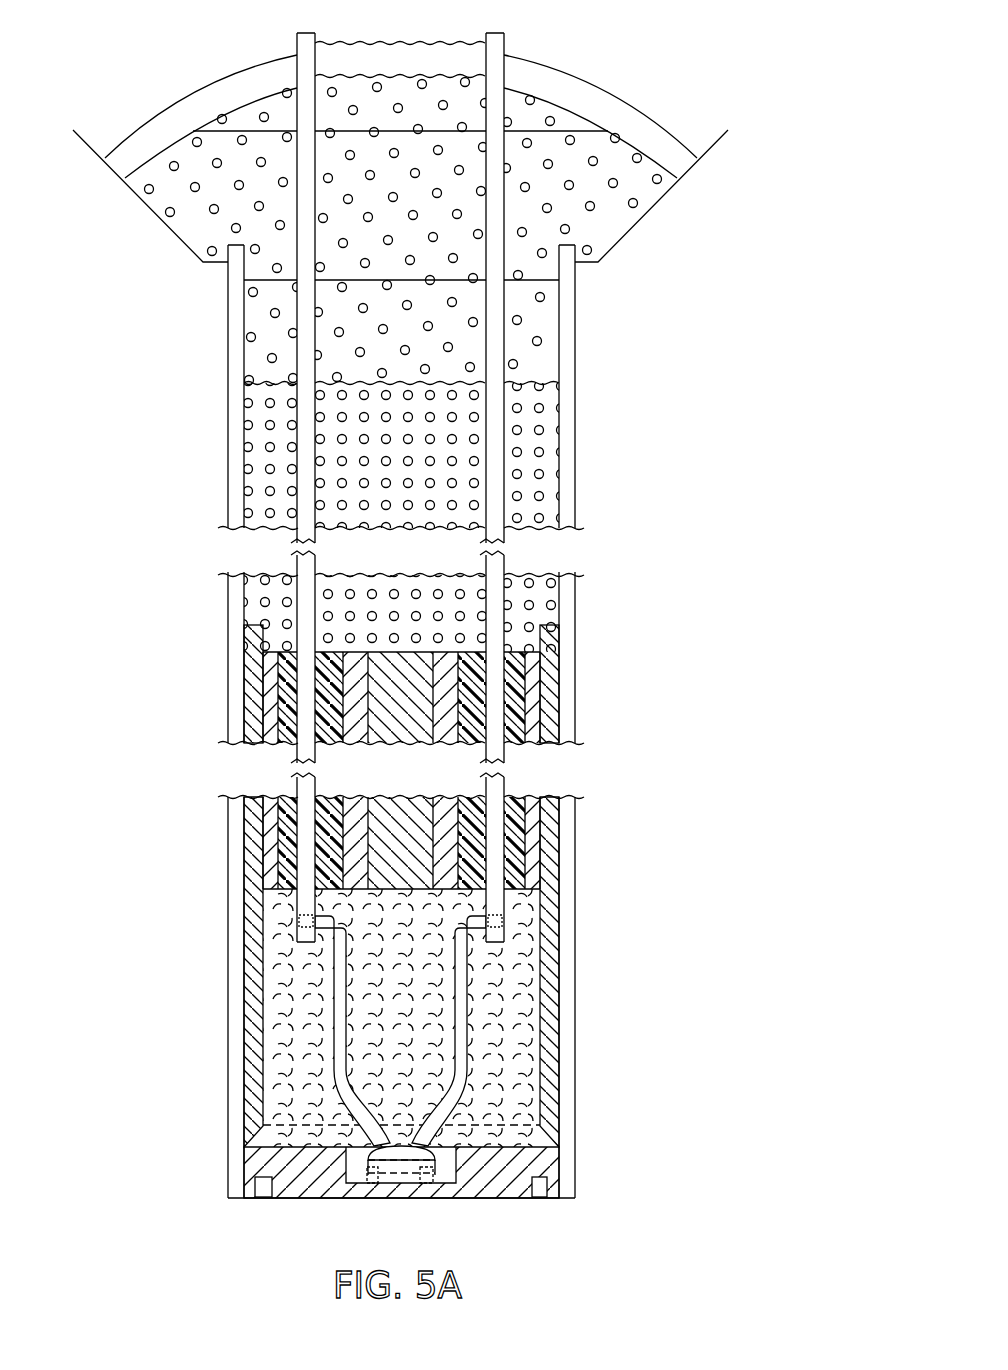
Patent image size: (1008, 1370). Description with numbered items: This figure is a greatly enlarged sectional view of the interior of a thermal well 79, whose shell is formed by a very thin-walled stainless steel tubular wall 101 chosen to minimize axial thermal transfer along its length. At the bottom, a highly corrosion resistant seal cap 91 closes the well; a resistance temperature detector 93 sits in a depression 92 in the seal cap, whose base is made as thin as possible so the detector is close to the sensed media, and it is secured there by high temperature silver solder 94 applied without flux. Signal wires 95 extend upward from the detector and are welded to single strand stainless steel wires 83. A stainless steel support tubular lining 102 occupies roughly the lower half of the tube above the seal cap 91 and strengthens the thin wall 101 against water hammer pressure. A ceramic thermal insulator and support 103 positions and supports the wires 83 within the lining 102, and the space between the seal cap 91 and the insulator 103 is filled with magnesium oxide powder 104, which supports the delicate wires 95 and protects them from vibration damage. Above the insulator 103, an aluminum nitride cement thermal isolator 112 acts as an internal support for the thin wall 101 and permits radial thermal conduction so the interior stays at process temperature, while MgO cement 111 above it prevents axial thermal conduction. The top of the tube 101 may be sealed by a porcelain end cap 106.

The thermal well 79 is at (610, 347).
The single strand stainless steel wires 83 is at (297, 43).
The seal cap 91 is at (262, 1167).
The depression 92 is at (456, 1165).
The resistance temperature detector (RTD) 93 is at (421, 1185).
The high temperature silver solder 94 is at (377, 1185).
The signal wires 95 is at (330, 986).
The tubular wall 101 is at (575, 612).
The support tubular lining 102 is at (550, 875).
The thermal insulator and support 103 is at (282, 703).
The magnesium oxide (MgO) powder 104 is at (505, 1035).
The porcelain end cap 106 is at (608, 105).
The MgO cement 111 is at (622, 223).
The aluminum nitride (AlN) cement thermal isolator 112 is at (455, 460).